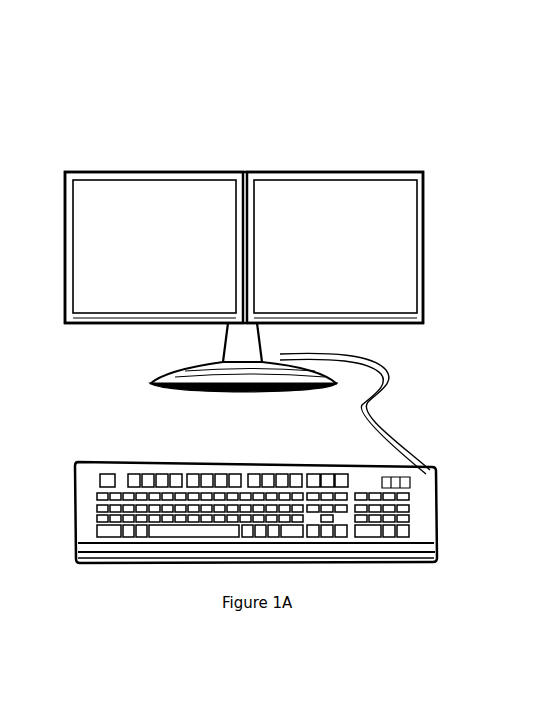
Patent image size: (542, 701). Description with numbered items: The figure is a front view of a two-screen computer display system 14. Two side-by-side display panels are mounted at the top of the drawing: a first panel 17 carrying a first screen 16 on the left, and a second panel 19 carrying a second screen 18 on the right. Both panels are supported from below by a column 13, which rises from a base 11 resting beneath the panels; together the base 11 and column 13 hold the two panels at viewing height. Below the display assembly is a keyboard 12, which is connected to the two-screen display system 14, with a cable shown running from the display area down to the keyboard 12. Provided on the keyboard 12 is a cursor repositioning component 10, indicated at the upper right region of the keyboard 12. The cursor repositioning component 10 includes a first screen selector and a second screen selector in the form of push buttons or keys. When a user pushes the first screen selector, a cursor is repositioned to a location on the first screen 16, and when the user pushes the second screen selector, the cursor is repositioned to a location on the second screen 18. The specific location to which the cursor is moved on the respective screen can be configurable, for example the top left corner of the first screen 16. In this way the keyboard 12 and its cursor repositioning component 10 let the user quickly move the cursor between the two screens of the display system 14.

The cursor repositioning component 10 is at (394, 467).
The base 11 is at (150, 383).
The keyboard 12 is at (110, 565).
The column 13 is at (222, 341).
The two-screen computer display system 14 is at (256, 130).
The first screen 16 is at (148, 196).
The first panel 17 is at (205, 190).
The second screen 18 is at (342, 202).
The second panel 19 is at (274, 172).